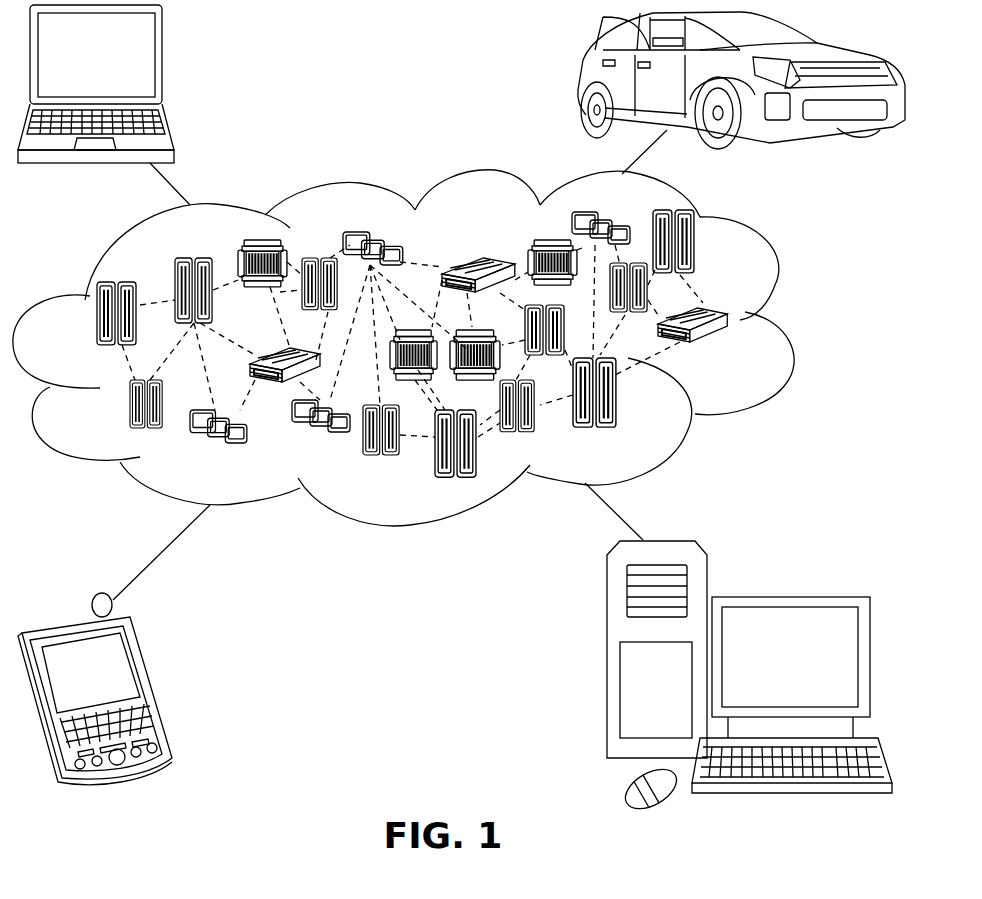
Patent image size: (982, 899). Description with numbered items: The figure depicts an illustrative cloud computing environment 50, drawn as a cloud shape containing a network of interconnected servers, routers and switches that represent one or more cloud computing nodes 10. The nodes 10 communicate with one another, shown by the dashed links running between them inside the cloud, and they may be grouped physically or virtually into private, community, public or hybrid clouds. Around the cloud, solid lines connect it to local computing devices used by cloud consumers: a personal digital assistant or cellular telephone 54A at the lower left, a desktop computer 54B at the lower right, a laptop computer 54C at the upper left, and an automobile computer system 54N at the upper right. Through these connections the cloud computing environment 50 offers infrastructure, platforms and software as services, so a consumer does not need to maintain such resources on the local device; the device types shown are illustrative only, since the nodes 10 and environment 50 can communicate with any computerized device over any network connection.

The cloud computing node 10 is at (738, 354).
The cloud computing environment 50 is at (788, 324).
The personal digital assistant or cellular telephone 54A is at (148, 687).
The desktop computer 54B is at (788, 597).
The laptop computer 54C is at (163, 65).
The automobile computer system 54N is at (578, 80).